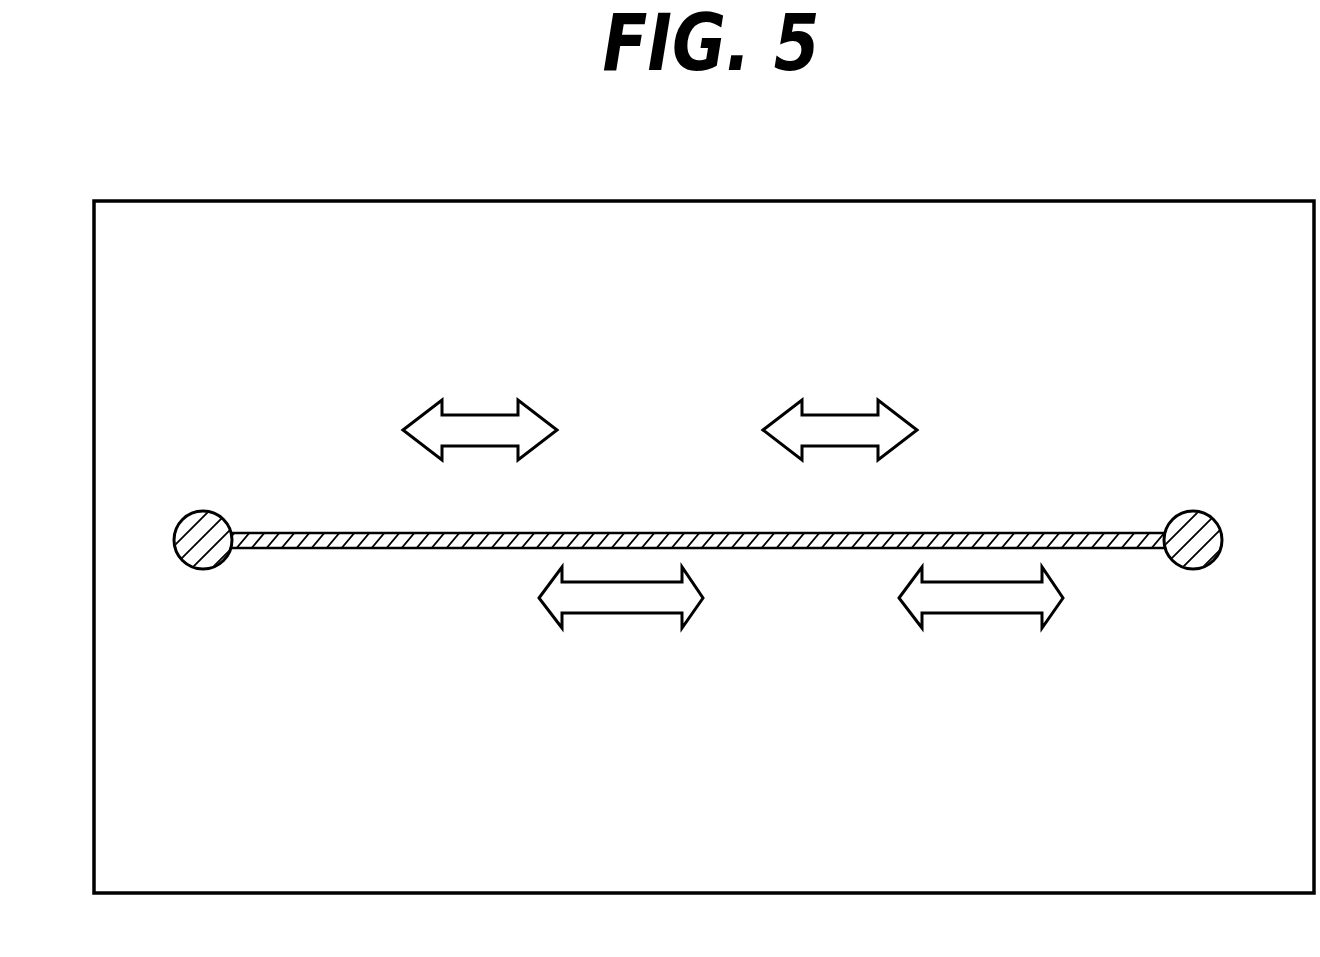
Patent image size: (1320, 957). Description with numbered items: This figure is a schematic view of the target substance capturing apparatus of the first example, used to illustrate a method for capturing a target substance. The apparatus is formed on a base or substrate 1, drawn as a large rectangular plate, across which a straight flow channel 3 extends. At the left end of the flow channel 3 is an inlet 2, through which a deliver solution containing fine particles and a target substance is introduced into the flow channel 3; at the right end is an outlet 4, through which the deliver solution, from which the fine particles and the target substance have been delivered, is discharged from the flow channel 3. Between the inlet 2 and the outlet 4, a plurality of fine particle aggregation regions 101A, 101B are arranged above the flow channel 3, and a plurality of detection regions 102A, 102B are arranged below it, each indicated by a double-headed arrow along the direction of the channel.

The base (substrate) 1 is at (1256, 226).
The inlet 2 is at (200, 511).
The flow channel 3 is at (1122, 531).
The outlet 4 is at (1195, 568).
The fine particle aggregation region 101A is at (482, 415).
The fine particle aggregation region 101B is at (843, 415).
The detection region 102A is at (617, 613).
The detection region 102B is at (982, 613).